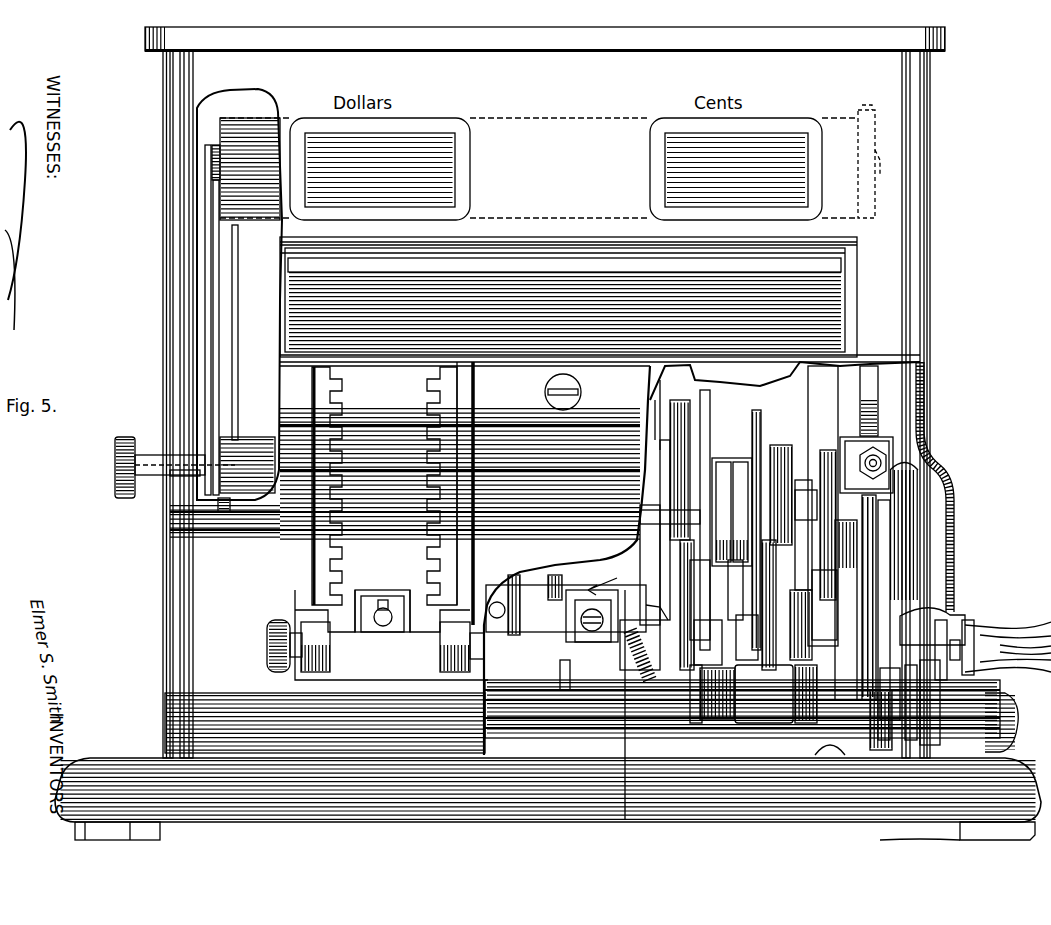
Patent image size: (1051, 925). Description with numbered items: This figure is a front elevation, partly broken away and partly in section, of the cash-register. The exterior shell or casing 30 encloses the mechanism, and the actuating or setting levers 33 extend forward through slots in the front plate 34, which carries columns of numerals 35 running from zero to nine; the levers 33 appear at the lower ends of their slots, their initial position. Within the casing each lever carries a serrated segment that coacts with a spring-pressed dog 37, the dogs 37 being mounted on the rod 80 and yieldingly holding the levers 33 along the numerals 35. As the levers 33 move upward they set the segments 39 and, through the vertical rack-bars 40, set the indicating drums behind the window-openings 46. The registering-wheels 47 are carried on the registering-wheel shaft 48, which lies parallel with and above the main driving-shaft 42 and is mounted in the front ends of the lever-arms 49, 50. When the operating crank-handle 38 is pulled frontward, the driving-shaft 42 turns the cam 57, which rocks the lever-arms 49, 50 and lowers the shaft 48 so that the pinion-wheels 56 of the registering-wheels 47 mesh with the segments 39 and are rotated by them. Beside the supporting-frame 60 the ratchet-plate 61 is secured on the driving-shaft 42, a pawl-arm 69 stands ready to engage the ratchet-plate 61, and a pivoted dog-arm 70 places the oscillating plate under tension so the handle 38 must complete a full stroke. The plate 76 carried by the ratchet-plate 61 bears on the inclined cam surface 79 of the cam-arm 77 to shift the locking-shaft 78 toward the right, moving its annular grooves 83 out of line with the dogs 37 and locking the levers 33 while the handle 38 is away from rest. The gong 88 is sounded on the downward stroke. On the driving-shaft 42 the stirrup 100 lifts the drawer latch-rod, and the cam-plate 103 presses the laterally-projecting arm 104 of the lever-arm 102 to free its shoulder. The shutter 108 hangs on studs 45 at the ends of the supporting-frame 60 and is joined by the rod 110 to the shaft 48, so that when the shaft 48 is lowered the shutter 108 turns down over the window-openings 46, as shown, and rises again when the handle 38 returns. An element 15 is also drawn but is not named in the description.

The direction arrow / shaft 15 is at (613, 701).
The exterior shell or casing 30 is at (165, 274).
The actuating or setting levers 33 is at (318, 640).
The front plate 34 is at (365, 493).
The columns of numerals 35 is at (383, 628).
The dogs 37 is at (770, 630).
The operating crank-handle 38 is at (975, 630).
The segments 39 is at (728, 605).
The vertical rack-bars 40 is at (826, 395).
The main driving-shaft 42 is at (640, 650).
The studs 45 is at (212, 148).
The window-openings 46 is at (556, 169).
The registering-wheels 47 is at (740, 458).
The registering-wheel shaft 48 is at (640, 518).
The lever-arm 49 is at (225, 515).
The lever-arm 50 is at (808, 490).
The pinion-wheels 56 is at (692, 470).
The cam 57 is at (831, 587).
The supporting-frame 60 is at (249, 332).
The ratchet-plate 61 is at (880, 590).
The pawl-arm 69 is at (875, 520).
The dog-arm 70 is at (880, 394).
The plate 76 is at (890, 744).
The cam-arm 77 is at (916, 692).
The locking-shaft 78 is at (746, 694).
The inclined or cam surface 79 is at (940, 600).
The rod 80 is at (742, 716).
The annular grooves 83 is at (712, 705).
The gong or alarm 88 is at (922, 462).
The stirrup 100 is at (566, 609).
The lever-arm 102 is at (562, 682).
The cam-plate 103 is at (592, 676).
The laterally-projecting arm 104 is at (580, 634).
The shutter 108 is at (272, 222).
The rod 110 is at (210, 344).